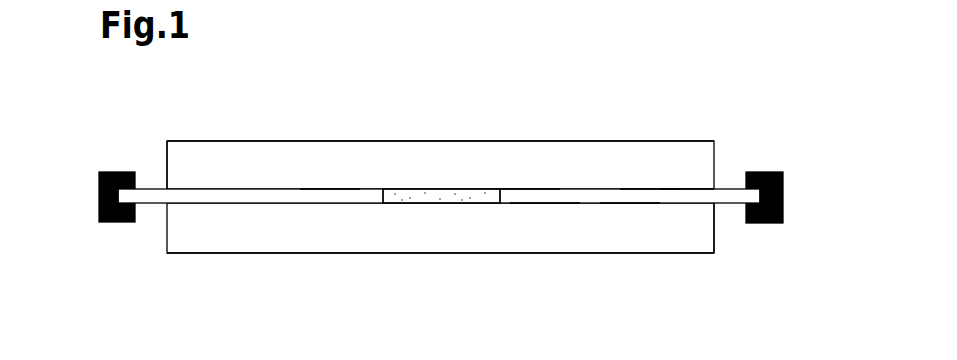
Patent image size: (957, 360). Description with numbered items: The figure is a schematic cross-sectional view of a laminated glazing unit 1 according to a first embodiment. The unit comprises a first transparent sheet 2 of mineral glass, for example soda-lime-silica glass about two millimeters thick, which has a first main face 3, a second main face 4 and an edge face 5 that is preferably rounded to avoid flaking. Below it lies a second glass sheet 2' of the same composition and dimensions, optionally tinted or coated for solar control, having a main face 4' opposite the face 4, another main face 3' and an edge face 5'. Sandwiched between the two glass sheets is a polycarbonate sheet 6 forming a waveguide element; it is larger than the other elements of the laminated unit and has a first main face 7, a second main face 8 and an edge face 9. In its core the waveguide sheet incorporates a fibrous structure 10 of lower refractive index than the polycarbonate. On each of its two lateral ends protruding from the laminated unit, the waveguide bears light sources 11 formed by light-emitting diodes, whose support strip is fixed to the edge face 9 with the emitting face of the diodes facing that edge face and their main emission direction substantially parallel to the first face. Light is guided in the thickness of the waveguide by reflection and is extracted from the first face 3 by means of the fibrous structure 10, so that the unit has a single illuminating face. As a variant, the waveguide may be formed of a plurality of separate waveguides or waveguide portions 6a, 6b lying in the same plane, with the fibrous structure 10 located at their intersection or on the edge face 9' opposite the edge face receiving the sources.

The laminated glazing unit 1 is at (553, 103).
The first transparent sheet 2 is at (440, 125).
The second glass sheet 2' is at (440, 262).
The first main face 3 is at (440, 110).
The main face 3' is at (440, 287).
The second main face 4 is at (710, 141).
The main face 4' is at (630, 260).
The edge face 5 is at (146, 137).
The edge face 5' is at (721, 258).
The polycarbonate sheet 6 is at (582, 197).
The waveguide 6a is at (333, 193).
The waveguide 6b is at (648, 190).
The first main face 7 is at (524, 189).
The second main face 8 is at (543, 203).
The edge face 9 is at (439, 235).
The edge face 9' is at (440, 248).
The fibrous structure 10 is at (459, 203).
The light sources 11 is at (98, 182).